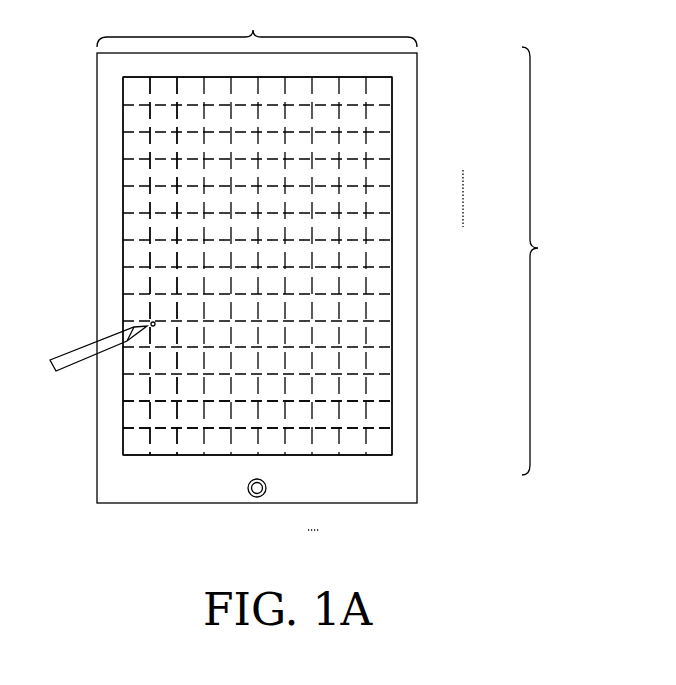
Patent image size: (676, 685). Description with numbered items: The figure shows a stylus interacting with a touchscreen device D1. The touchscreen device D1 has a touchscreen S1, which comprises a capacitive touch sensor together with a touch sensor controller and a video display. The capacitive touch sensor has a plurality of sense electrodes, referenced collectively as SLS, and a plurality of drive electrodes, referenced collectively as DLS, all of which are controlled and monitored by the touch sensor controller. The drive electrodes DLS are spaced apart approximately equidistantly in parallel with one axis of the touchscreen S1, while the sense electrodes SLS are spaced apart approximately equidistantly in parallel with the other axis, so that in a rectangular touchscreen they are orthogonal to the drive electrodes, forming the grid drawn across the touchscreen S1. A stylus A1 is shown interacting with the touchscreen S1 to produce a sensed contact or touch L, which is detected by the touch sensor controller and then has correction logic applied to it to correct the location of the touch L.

The touchscreen device D1 is at (83, 166).
The touchscreen S1 is at (132, 88).
The sense electrodes SLS is at (257, 26).
The drive electrodes DLS is at (523, 261).
The stylus A1 is at (63, 368).
The touch L is at (160, 333).